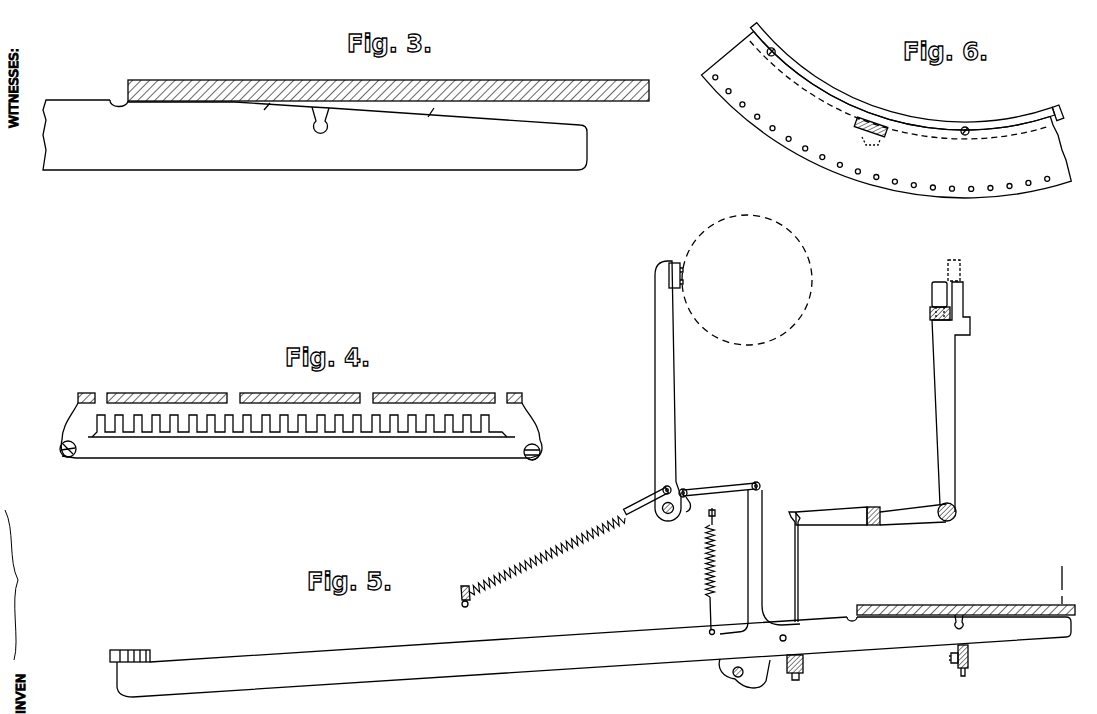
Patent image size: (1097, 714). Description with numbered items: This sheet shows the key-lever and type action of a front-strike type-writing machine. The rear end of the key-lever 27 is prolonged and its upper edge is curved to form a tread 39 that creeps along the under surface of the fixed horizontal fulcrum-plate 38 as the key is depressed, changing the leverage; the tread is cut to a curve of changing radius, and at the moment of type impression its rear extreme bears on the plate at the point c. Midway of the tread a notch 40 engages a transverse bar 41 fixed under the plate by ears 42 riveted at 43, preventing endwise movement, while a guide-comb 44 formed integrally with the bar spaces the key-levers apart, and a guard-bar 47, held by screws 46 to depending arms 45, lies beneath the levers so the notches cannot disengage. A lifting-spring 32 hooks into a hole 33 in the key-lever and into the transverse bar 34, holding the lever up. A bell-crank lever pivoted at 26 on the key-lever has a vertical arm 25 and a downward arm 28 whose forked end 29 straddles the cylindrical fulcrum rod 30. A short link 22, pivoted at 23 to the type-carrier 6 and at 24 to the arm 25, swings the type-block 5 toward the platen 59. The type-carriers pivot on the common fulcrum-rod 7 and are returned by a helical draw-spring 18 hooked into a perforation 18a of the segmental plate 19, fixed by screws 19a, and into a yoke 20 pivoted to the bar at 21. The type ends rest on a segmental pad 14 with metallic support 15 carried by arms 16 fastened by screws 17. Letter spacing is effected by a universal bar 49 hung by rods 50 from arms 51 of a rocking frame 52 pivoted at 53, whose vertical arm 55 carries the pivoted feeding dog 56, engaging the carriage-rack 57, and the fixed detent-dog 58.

In FIG. 5, the type-block 5 is at (676, 266).
In FIG. 5, the type-carrier 6 is at (668, 380).
In FIG. 5, the fulcrum-rod 7 is at (666, 514).
In FIG. 6, the segmental pad 14 is at (1035, 103).
In FIG. 6, the metallic support 15 is at (1064, 112).
In FIG. 6, the arms 16 is at (855, 125).
In FIG. 6, the screws 17 is at (872, 146).
In FIG. 5, the helical draw-spring 18 is at (582, 540).
In FIG. 6, the perforation 18a is at (903, 172).
In FIG. 6, the segmental plate 19 is at (887, 114).
In FIG. 5, the segmental plate 19 is at (457, 591).
In FIG. 6, the screws 19a is at (978, 118).
In FIG. 5, the yoke 20 is at (645, 500).
In FIG. 5, the pivot point 21 is at (687, 482).
In FIG. 5, the draw bar 22 is at (740, 480).
In FIG. 5, the forward end pivot 23 is at (696, 512).
In FIG. 5, the rear end pivot 24 is at (760, 486).
In FIG. 5, the vertical arm 25 is at (762, 556).
In FIG. 5, the pivot point 26 is at (786, 638).
In FIG. 3, the key-lever 27 is at (315, 135).
In FIG. 5, the key-lever 27 is at (594, 657).
In FIG. 5, the arm of bell-crank lever 28 is at (766, 676).
In FIG. 5, the fork 29 is at (722, 683).
In FIG. 5, the fulcrum rod 30 is at (733, 672).
In FIG. 5, the lifting-spring 32 is at (715, 566).
In FIG. 5, the hole 33 is at (712, 636).
In FIG. 5, the transverse bar 34 is at (715, 513).
In FIG. 3, the fulcrum-plate 38 is at (388, 82).
In FIG. 5, the fulcrum-plate 38 is at (966, 600).
In FIG. 3, the tread 39 is at (344, 119).
In FIG. 5, the tread 39 is at (930, 618).
In FIG. 3, the notch 40 is at (328, 128).
In FIG. 5, the notch 40 is at (954, 625).
In FIG. 4, the transverse bar 41 is at (323, 412).
In FIG. 5, the transverse bar 41 is at (963, 624).
In FIG. 4, the ears 42 is at (373, 402).
In FIG. 4, the rivets 43 is at (362, 397).
In FIG. 5, the rivets 43 is at (957, 612).
In FIG. 4, the guide-comb 44 is at (497, 432).
In FIG. 5, the guide-comb 44 is at (968, 648).
In FIG. 4, the depending arms 45 is at (540, 437).
In FIG. 5, the depending arms 45 is at (963, 677).
In FIG. 4, the screws 46 is at (302, 456).
In FIG. 5, the screws 46 is at (946, 666).
In FIG. 4, the guard-bar 47 is at (301, 449).
In FIG. 5, the guard-bar 47 is at (968, 666).
In FIG. 5, the universal bar 49 is at (803, 665).
In FIG. 5, the rods 50 is at (798, 566).
In FIG. 5, the arms 51 is at (836, 508).
In FIG. 5, the rocking frame 52 is at (900, 503).
In FIG. 5, the pivot 53 is at (956, 512).
In FIG. 5, the vertical arm 55 is at (955, 400).
In FIG. 5, the feeding dog 56 is at (932, 300).
In FIG. 5, the carriage-rack 57 is at (960, 270).
In FIG. 5, the detent-dog 58 is at (963, 303).
In FIG. 5, the platen 59 is at (758, 280).
In FIG. 5, the fulcrum point at impression c is at (1061, 577).